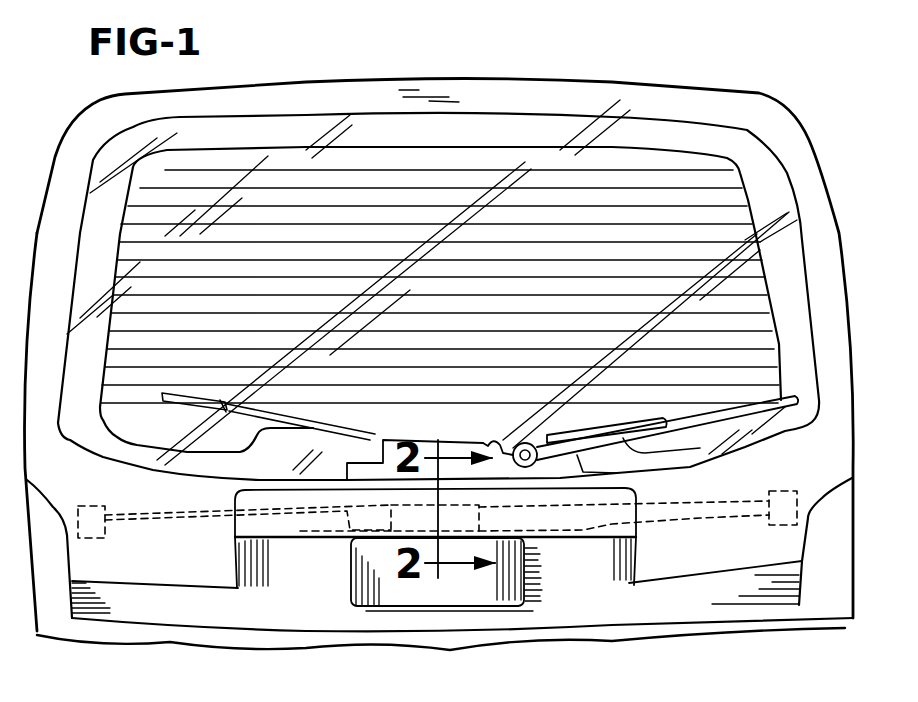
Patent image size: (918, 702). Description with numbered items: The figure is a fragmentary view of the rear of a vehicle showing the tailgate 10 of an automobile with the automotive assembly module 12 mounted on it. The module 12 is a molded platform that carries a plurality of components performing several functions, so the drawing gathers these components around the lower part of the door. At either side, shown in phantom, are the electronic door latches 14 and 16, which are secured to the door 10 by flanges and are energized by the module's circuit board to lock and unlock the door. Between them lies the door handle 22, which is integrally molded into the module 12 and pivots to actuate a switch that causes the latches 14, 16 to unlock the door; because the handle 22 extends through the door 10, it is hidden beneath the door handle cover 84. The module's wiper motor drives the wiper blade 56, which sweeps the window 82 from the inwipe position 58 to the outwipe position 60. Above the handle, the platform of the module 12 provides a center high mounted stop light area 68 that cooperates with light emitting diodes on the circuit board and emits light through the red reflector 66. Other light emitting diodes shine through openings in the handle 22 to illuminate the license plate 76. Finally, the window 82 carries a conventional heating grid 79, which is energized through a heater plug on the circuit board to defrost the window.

The tailgate 10 is at (58, 150).
The automotive assembly module 12 is at (601, 524).
The electronic door latch 14 is at (775, 525).
The electronic door latch 16 is at (107, 535).
The door handle 22 is at (480, 500).
The wiper blade 56 is at (742, 405).
The inwipe position 58 is at (793, 418).
The outwipe position 60 is at (168, 417).
The reflector 66 is at (482, 445).
The center high mounted stop light area 68 is at (417, 430).
The license plate 76 is at (359, 586).
The heating grid 79 is at (459, 187).
The window 82 is at (378, 127).
The door handle cover 84 is at (280, 530).